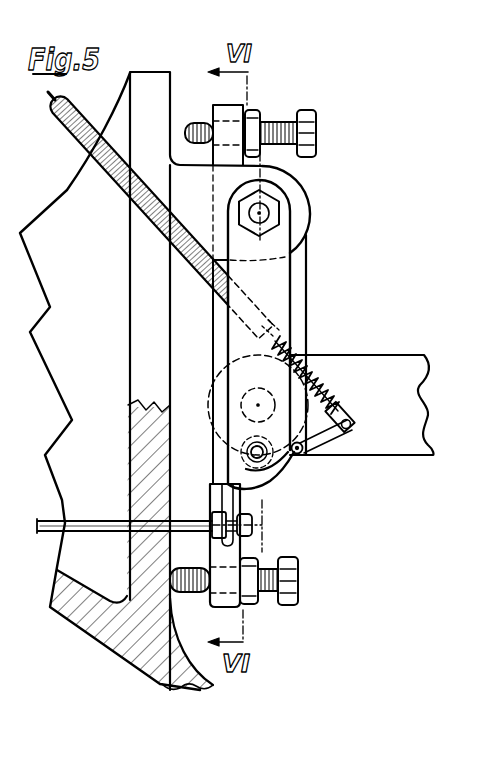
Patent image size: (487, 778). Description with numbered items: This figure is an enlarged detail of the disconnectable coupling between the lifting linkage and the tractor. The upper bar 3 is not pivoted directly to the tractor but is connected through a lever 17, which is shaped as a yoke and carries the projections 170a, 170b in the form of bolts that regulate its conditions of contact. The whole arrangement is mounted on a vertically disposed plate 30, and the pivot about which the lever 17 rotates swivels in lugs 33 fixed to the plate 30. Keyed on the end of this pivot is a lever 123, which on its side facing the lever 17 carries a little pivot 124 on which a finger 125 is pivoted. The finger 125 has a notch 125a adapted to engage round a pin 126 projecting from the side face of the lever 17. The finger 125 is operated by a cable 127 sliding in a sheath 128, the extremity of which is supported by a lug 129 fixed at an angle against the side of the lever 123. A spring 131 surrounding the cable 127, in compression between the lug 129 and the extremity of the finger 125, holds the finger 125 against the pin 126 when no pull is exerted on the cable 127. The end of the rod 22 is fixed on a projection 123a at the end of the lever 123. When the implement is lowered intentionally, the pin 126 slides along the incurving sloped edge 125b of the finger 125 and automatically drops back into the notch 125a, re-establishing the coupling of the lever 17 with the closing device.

The plate 30 is at (152, 72).
The lugs 33 is at (300, 190).
The lever 123 is at (290, 277).
The lever 17 is at (300, 303).
The spring 131 is at (313, 375).
The cable 127 is at (323, 392).
The upper bar 3 is at (424, 398).
The lug 129 is at (232, 335).
The sheath 128 is at (115, 200).
The edge 125b is at (335, 432).
The notch 125a is at (305, 454).
The finger 125 is at (327, 432).
The projection 123a is at (217, 487).
The rod 22 is at (108, 518).
The little pivot 124 is at (258, 462).
The pin 126 is at (297, 463).
The projection 170a is at (298, 585).
The projection 170b is at (304, 110).